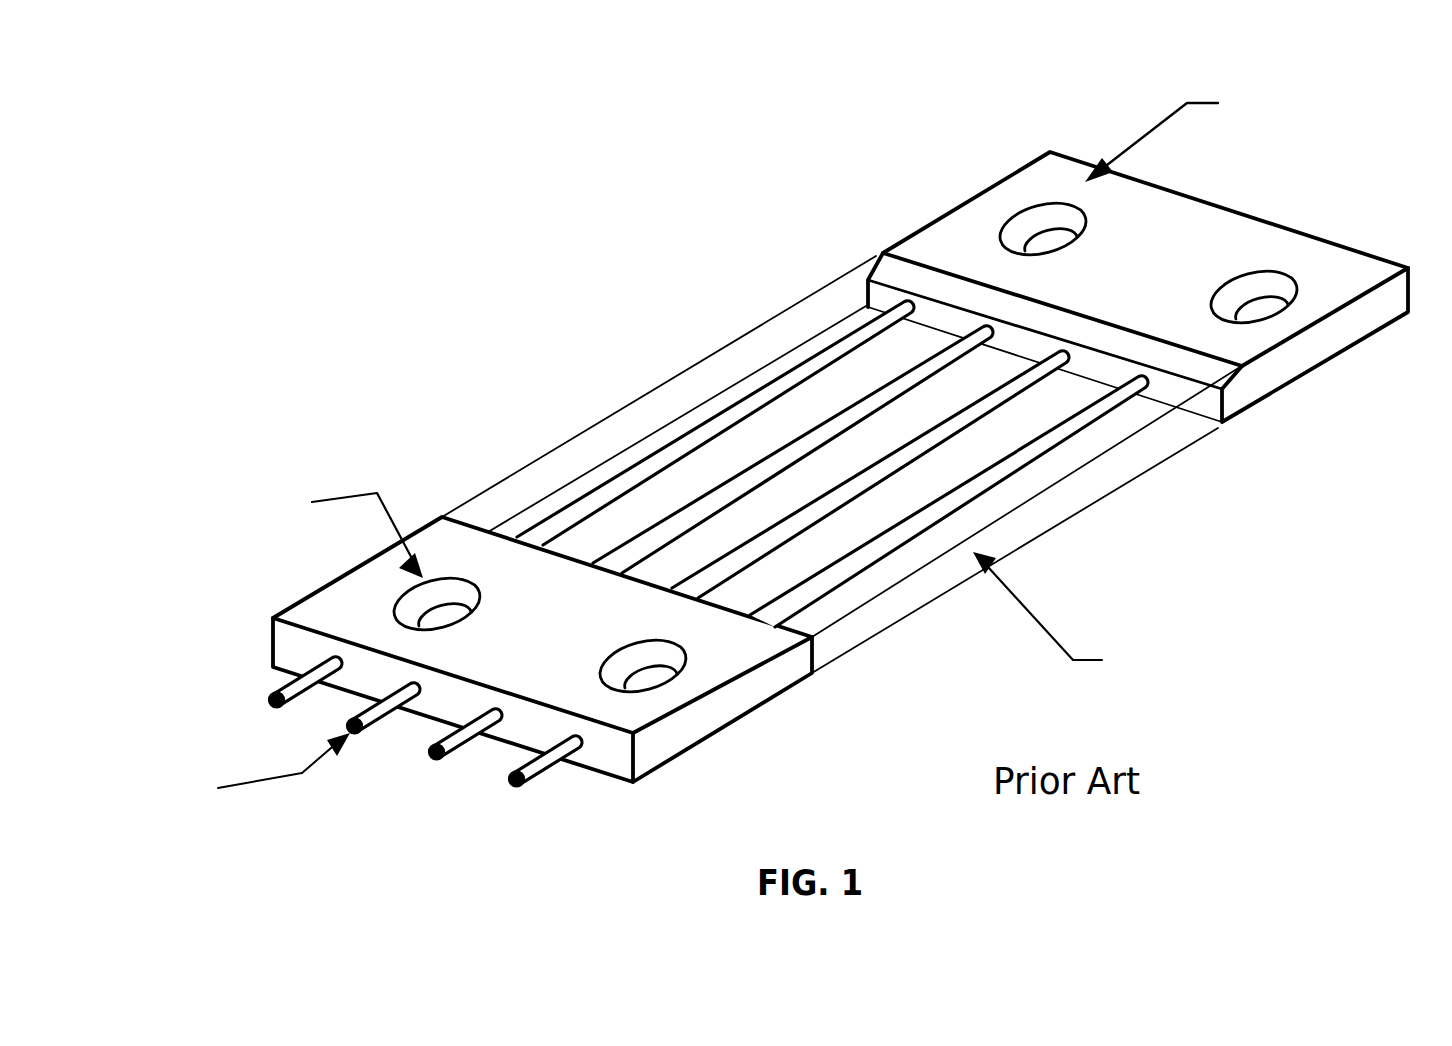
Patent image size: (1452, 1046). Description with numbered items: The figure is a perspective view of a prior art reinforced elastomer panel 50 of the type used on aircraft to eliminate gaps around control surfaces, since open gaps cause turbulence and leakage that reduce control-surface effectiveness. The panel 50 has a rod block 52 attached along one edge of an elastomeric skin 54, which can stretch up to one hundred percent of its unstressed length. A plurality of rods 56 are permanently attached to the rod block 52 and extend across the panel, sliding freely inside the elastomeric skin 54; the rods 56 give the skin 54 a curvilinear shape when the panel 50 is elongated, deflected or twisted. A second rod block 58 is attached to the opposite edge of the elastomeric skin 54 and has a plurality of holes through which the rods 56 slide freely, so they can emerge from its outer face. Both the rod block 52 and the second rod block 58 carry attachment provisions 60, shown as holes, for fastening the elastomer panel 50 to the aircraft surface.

The reinforced elastomer panel 50 is at (802, 80).
The rod block 52 is at (1057, 152).
The elastomeric skin 54 is at (867, 618).
The rods 56 is at (705, 430).
The second rod block 58 is at (615, 758).
The attachment provisions 60 is at (1065, 202).